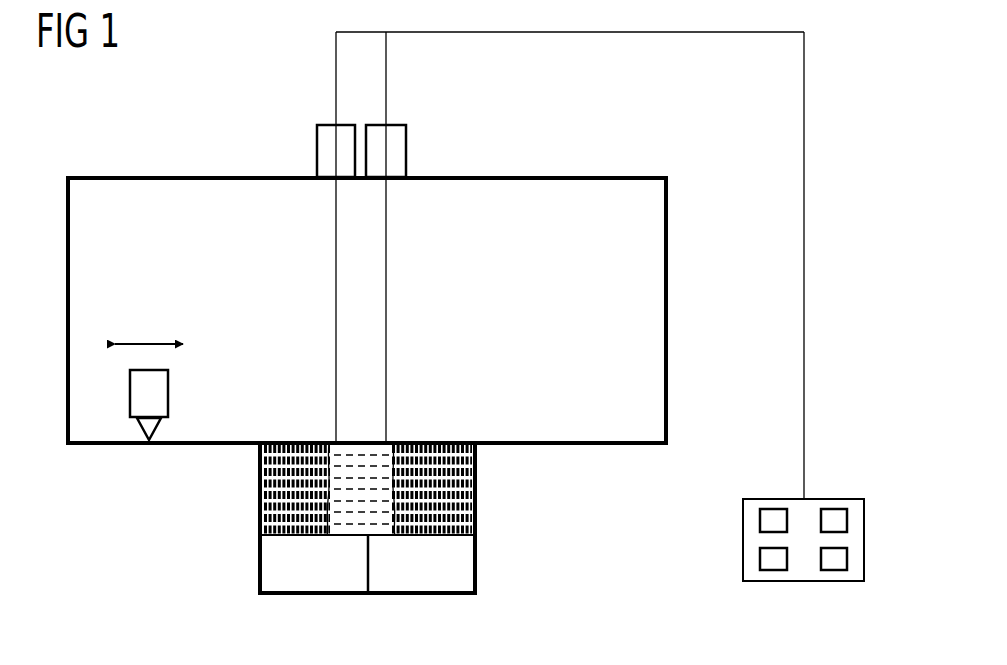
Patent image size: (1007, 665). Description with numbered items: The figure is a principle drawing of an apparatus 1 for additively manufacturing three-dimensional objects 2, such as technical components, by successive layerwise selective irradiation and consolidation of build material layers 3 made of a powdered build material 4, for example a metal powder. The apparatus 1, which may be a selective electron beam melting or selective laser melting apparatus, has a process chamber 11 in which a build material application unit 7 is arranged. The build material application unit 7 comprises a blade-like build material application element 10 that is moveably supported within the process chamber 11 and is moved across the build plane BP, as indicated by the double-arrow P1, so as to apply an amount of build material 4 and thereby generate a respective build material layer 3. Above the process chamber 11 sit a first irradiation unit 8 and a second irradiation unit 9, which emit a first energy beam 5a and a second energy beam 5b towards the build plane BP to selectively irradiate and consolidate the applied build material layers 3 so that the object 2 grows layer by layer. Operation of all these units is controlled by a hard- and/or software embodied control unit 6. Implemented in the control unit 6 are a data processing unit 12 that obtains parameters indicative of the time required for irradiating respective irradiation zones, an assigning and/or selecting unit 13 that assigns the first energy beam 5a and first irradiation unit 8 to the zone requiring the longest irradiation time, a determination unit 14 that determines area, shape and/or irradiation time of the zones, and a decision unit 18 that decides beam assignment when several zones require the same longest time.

The apparatus 1 is at (155, 145).
The three-dimensional object 2 is at (385, 482).
The build material layer 3 is at (276, 482).
The build material 4 is at (276, 504).
The first energy beam 5a is at (333, 221).
The second energy beam 5b is at (387, 242).
The control unit 6 is at (742, 536).
The build material application unit 7 is at (213, 335).
The first irradiation unit 8 is at (323, 116).
The second irradiation unit 9 is at (399, 114).
The build material application element 10 is at (169, 392).
The process chamber 11 is at (668, 240).
The data processing unit 12 is at (773, 512).
The assigning and/or selecting unit 13 is at (834, 512).
The determination unit 14 is at (773, 568).
The decision unit 18 is at (834, 568).
The double-arrow P1 is at (148, 342).
The build plane BP is at (416, 430).